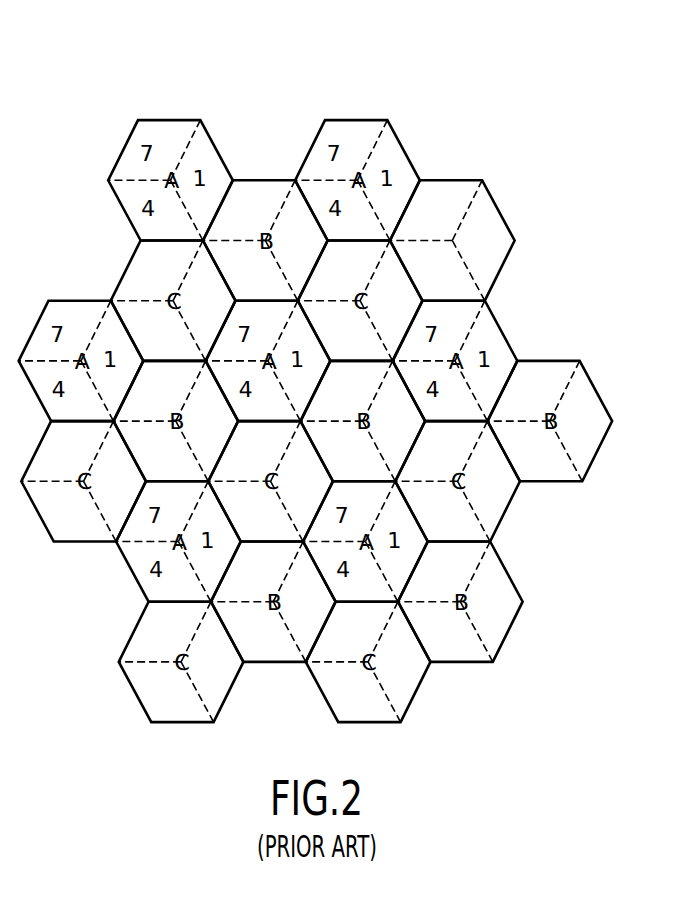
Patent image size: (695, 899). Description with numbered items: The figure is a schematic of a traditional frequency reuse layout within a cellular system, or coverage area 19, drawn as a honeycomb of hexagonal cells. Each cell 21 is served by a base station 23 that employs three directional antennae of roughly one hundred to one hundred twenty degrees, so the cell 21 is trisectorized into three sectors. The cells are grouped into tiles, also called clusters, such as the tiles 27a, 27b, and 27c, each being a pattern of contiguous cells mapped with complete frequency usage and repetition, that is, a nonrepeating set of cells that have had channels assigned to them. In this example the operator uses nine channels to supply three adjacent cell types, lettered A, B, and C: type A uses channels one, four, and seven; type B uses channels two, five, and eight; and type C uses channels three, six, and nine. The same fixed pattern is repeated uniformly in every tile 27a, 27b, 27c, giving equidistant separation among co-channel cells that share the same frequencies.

The cellular system 19 is at (584, 84).
The cell 21 is at (357, 260).
The base station 23 is at (468, 241).
The tile 27a is at (508, 222).
The tile 27b is at (550, 358).
The tile 27c is at (510, 573).